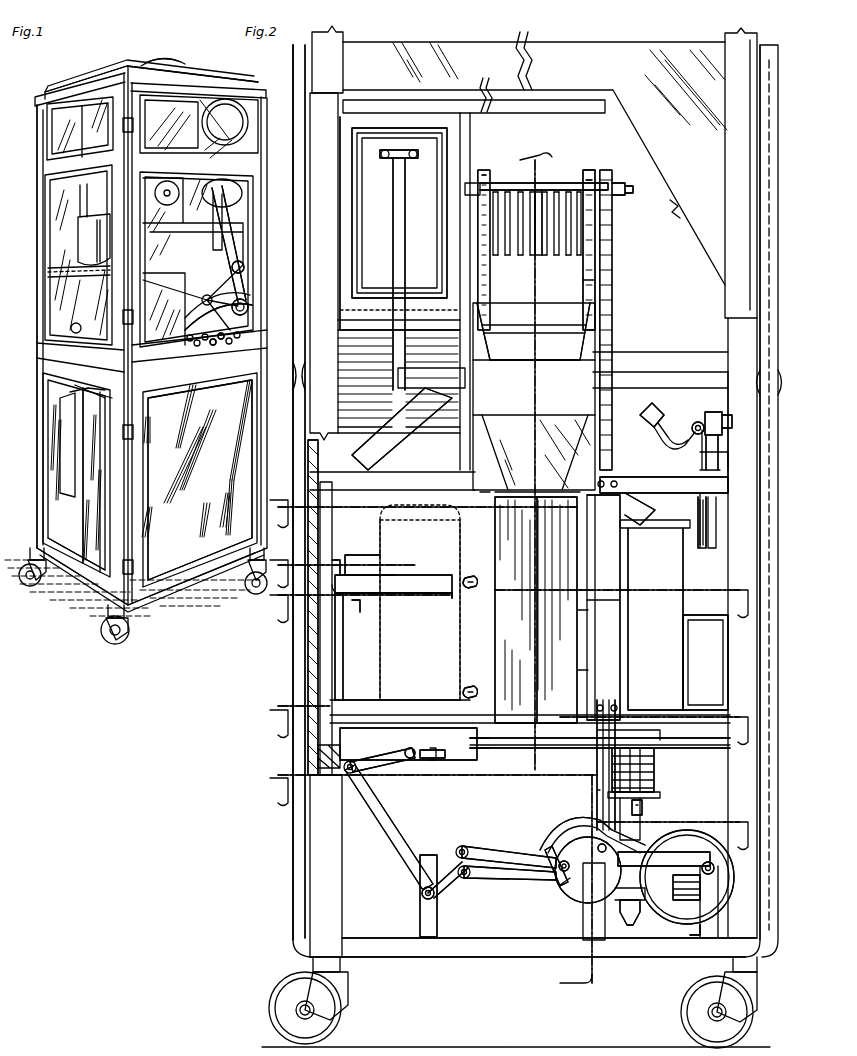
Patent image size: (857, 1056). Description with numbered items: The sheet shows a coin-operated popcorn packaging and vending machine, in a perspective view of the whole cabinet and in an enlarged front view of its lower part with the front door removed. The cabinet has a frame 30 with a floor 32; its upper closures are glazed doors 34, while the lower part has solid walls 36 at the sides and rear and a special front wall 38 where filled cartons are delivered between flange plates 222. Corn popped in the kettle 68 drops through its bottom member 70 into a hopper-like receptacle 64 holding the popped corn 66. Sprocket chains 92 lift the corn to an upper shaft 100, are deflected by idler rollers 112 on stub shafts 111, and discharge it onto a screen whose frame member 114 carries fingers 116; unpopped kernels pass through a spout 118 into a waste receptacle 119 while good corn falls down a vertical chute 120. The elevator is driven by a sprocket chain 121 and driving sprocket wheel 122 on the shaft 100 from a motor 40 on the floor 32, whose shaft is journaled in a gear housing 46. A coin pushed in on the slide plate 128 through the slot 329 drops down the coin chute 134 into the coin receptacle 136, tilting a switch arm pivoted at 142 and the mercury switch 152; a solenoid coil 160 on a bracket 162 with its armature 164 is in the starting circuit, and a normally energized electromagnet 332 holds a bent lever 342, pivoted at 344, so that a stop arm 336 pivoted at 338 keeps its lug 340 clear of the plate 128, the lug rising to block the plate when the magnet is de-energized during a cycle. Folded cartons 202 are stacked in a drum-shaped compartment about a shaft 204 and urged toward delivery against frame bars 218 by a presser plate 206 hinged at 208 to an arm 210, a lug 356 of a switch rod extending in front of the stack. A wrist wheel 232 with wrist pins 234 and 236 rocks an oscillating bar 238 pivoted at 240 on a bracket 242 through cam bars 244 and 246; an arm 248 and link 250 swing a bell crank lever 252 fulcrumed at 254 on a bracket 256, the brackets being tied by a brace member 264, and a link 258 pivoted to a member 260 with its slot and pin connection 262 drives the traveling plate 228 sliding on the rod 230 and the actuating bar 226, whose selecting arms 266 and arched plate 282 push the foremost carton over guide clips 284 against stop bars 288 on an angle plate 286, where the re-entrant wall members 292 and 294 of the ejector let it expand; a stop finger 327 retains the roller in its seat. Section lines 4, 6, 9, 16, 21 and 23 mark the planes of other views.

In FIG. 1, the frame 30 is at (262, 83).
In FIG. 2, the frame 30 is at (318, 748).
In FIG. 2, the floor 32 is at (445, 958).
In FIG. 1, the glazed doors 34 is at (37, 293).
In FIG. 2, the glazed doors 34 is at (305, 172).
In FIG. 1, the solid walls 36 is at (180, 582).
In FIG. 2, the solid walls 36 is at (296, 850).
In FIG. 1, the front wall 38 is at (98, 572).
In FIG. 2, the motor 40 is at (687, 877).
In FIG. 2, the gear housing 46 is at (690, 905).
In FIG. 1, the hopper-like receptacle 64 is at (250, 330).
In FIG. 1, the popped corn 66 is at (210, 345).
In FIG. 1, the kettle 68 is at (238, 243).
In FIG. 1, the bottom member 70 is at (245, 285).
In FIG. 1, the sprocket chains 92 is at (72, 327).
In FIG. 2, the sprocket chains 92 is at (490, 276).
In FIG. 2, the upper shaft 100 is at (633, 189).
In FIG. 2, the stub shafts 111 is at (490, 298).
In FIG. 2, the idler rollers 112 is at (592, 295).
In FIG. 2, the frame member 114 is at (565, 185).
In FIG. 2, the screening fingers 116 is at (540, 255).
In FIG. 2, the spout 118 is at (633, 493).
In FIG. 2, the waste receptacle 119 is at (655, 619).
In FIG. 1, the vertical chute 120 is at (70, 392).
In FIG. 2, the vertical chute 120 is at (590, 320).
In FIG. 2, the sprocket chain 121 is at (612, 245).
In FIG. 2, the driving sprocket wheel 122 is at (622, 178).
In FIG. 1, the slide plate 128 is at (108, 408).
In FIG. 2, the coin chute 134 is at (702, 468).
In FIG. 2, the coin receptacle 136 is at (705, 662).
In FIG. 2, the pivot point 142 is at (700, 513).
In FIG. 2, the mercury switch 152 is at (628, 928).
In FIG. 2, the solenoid coil 160 is at (654, 770).
In FIG. 2, the bracket 162 is at (605, 800).
In FIG. 2, the armature 164 is at (642, 806).
In FIG. 2, the cartons 202 is at (347, 247).
In FIG. 2, the shaft 204 is at (432, 415).
In FIG. 2, the presser plate 206 is at (399, 213).
In FIG. 2, the hinge connection 208 is at (393, 160).
In FIG. 2, the arm 210 is at (393, 220).
In FIG. 2, the frame bars 218 is at (425, 575).
In FIG. 1, the flange plates 222 is at (62, 452).
In FIG. 2, the actuating bar 226 is at (350, 540).
In FIG. 2, the traveling plate 228 is at (408, 744).
In FIG. 2, the rod 230 is at (700, 750).
In FIG. 2, the wrist wheel 232 is at (575, 898).
In FIG. 2, the wrist pin 234 is at (562, 872).
In FIG. 2, the wrist pin 236 is at (605, 850).
In FIG. 2, the oscillating bar 238 is at (678, 845).
In FIG. 2, the pivot 240 is at (708, 862).
In FIG. 2, the bracket 242 is at (710, 925).
In FIG. 2, the cam bar 244 is at (548, 880).
In FIG. 2, the cam bar 246 is at (560, 822).
In FIG. 2, the arm 248 is at (505, 848).
In FIG. 2, the link 250 is at (455, 865).
In FIG. 2, the bell crank lever 252 is at (400, 850).
In FIG. 2, the fulcrum 254 is at (422, 893).
In FIG. 2, the bracket 256 is at (437, 918).
In FIG. 2, the link 258 is at (385, 768).
In FIG. 2, the member 260 is at (420, 760).
In FIG. 2, the slot and pin connection 262 is at (445, 754).
In FIG. 2, the brace member 264 is at (480, 880).
In FIG. 2, the selecting arm 266 is at (343, 605).
In FIG. 2, the arched plate 282 is at (350, 630).
In FIG. 2, the guide clips 284 is at (472, 590).
In FIG. 2, the angle plate 286 is at (603, 547).
In FIG. 2, the stop bars 288 is at (580, 678).
In FIG. 2, the wall member 292 is at (516, 610).
In FIG. 2, the wall member 294 is at (557, 610).
In FIG. 2, the stop finger 327 is at (483, 760).
In FIG. 1, the slot 329 is at (75, 540).
In FIG. 2, the electromagnet 332 is at (718, 445).
In FIG. 2, the stop arm 336 is at (722, 430).
In FIG. 2, the pivot point 338 is at (732, 415).
In FIG. 2, the lug 340 is at (728, 395).
In FIG. 2, the bent lever 342 is at (655, 395).
In FIG. 2, the pivot point 344 is at (698, 422).
In FIG. 2, the lug 356 is at (340, 568).
In FIG. 2, the section line 4- 4 is at (343, 558).
In FIG. 2, the section line 6- 6 is at (362, 585).
In FIG. 2, the section line 9- 9 is at (509, 792).
In FIG. 2, the section line 16- 16 is at (571, 571).
In FIG. 2, the section line 21- 21 is at (511, 538).
In FIG. 2, the section line 23- 23 is at (510, 705).